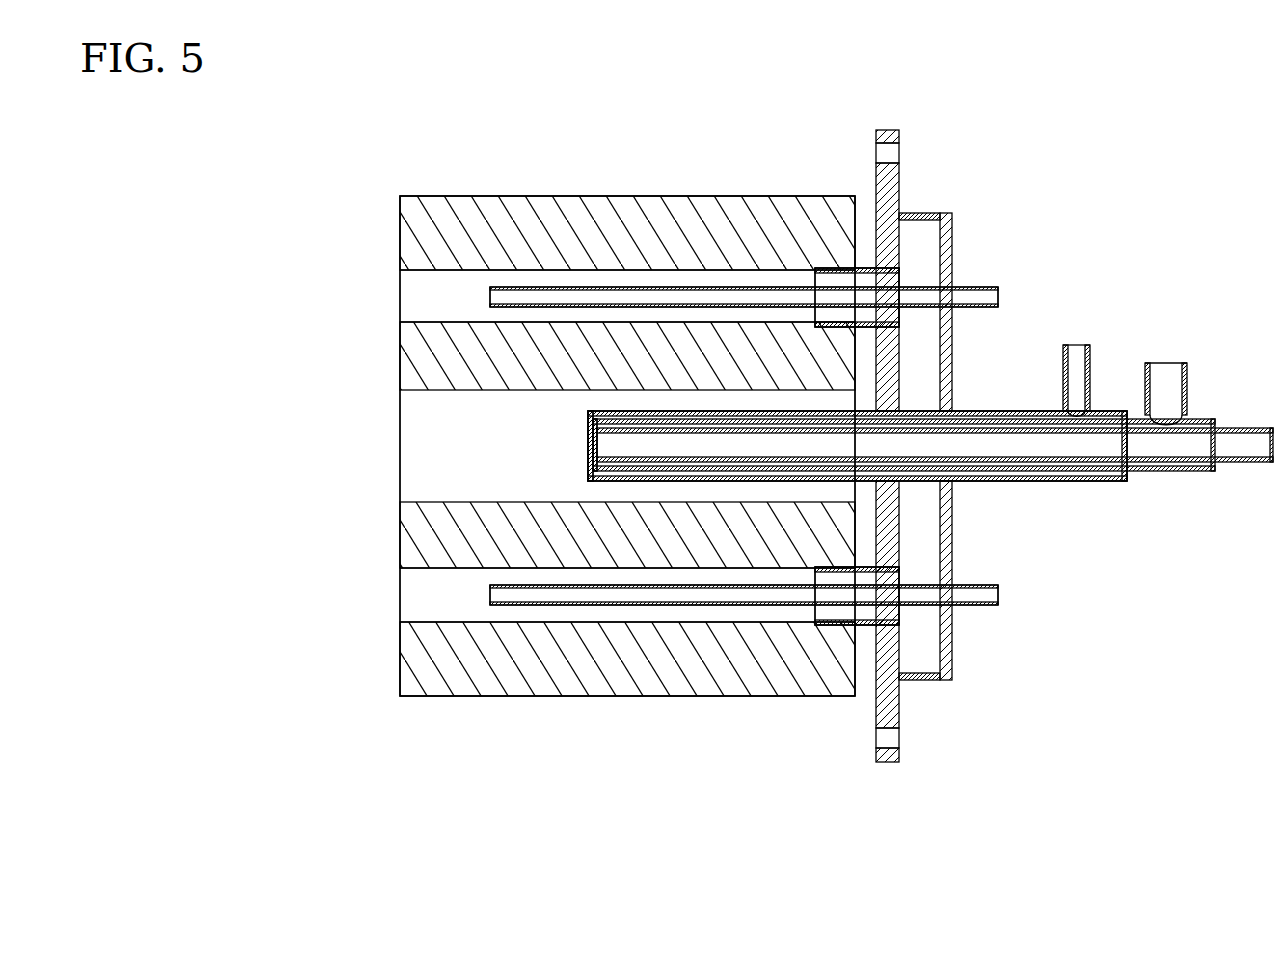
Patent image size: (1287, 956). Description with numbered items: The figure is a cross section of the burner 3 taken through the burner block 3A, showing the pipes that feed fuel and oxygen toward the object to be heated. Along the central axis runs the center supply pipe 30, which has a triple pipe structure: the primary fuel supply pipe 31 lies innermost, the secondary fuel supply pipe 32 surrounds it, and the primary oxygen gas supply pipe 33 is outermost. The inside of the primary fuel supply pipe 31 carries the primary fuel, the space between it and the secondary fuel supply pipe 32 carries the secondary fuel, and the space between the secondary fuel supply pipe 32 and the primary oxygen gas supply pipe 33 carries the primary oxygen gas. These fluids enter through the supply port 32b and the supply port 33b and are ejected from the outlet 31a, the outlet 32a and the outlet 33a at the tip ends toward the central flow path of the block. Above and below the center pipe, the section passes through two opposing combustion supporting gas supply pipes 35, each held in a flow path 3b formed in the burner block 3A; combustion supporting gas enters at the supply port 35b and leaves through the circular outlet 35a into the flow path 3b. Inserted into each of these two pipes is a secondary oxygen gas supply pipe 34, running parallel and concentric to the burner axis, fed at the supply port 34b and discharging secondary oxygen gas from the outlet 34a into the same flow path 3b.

The burner 3 is at (326, 113).
The burner block 3A is at (492, 188).
The flow path 3b is at (655, 282).
The center supply pipe 30 is at (1026, 492).
The primary fuel supply pipe 31 is at (621, 458).
The outlet 31a is at (590, 432).
The secondary fuel supply pipe 32 is at (608, 470).
The outlet 32a is at (590, 420).
The supply port 32b is at (1165, 360).
The primary oxygen gas supply pipe 33 is at (638, 466).
The outlet 33a is at (597, 473).
The supply port 33b is at (1077, 343).
The secondary oxygen gas supply pipe 34 is at (600, 290).
The outlet 34a is at (490, 288).
The supply port 34b is at (1000, 292).
The combustion supporting gas supply pipe 35 is at (832, 324).
The outlet 35a is at (815, 322).
The supply port 35b is at (900, 270).